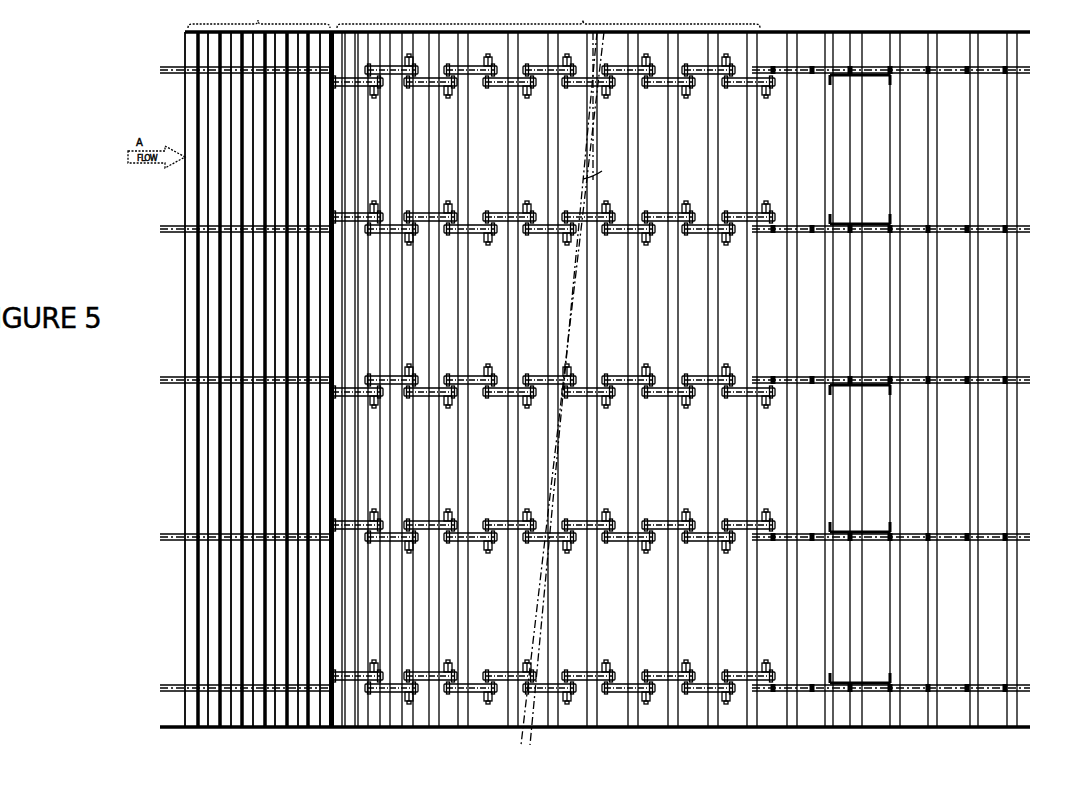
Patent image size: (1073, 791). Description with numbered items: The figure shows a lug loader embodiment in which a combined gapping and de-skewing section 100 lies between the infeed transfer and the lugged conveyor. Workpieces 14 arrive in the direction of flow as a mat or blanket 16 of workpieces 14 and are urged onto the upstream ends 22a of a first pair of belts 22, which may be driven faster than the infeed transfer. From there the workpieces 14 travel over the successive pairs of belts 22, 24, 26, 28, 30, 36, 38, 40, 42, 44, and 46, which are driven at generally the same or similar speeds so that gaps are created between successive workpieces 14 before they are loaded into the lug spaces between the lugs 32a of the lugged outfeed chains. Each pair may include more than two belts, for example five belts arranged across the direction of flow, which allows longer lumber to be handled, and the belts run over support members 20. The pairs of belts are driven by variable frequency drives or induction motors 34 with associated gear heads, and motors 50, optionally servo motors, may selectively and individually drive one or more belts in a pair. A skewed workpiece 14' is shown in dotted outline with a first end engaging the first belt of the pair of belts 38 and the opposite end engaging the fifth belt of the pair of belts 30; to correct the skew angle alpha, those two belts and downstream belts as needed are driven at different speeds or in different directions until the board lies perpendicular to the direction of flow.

The workpiece 14 is at (592, 379).
The skewed workpiece 14' is at (561, 388).
The mat or blanket of workpieces 16 is at (259, 18).
The combined gapping and de-skewing section 100 is at (548, 18).
The support rail 20 is at (180, 74).
The upstream ends of first pair of belts 22a is at (330, 86).
The first pair of belts 22 is at (356, 379).
The pair of belts 24 is at (391, 381).
The pair of belts 26 is at (430, 379).
The pair of belts 28 is at (470, 381).
The pair of belts 30 is at (509, 379).
The lugs 32a is at (884, 381).
The variable frequency drives or induction motors 34 is at (452, 381).
The pair of belts 36 is at (549, 381).
The pair of belts 38 is at (588, 379).
The pair of belts 40 is at (628, 381).
The pair of belts 42 is at (668, 379).
The pair of belts 44 is at (708, 381).
The pair of belts 46 is at (748, 379).
The motors 50 is at (670, 381).